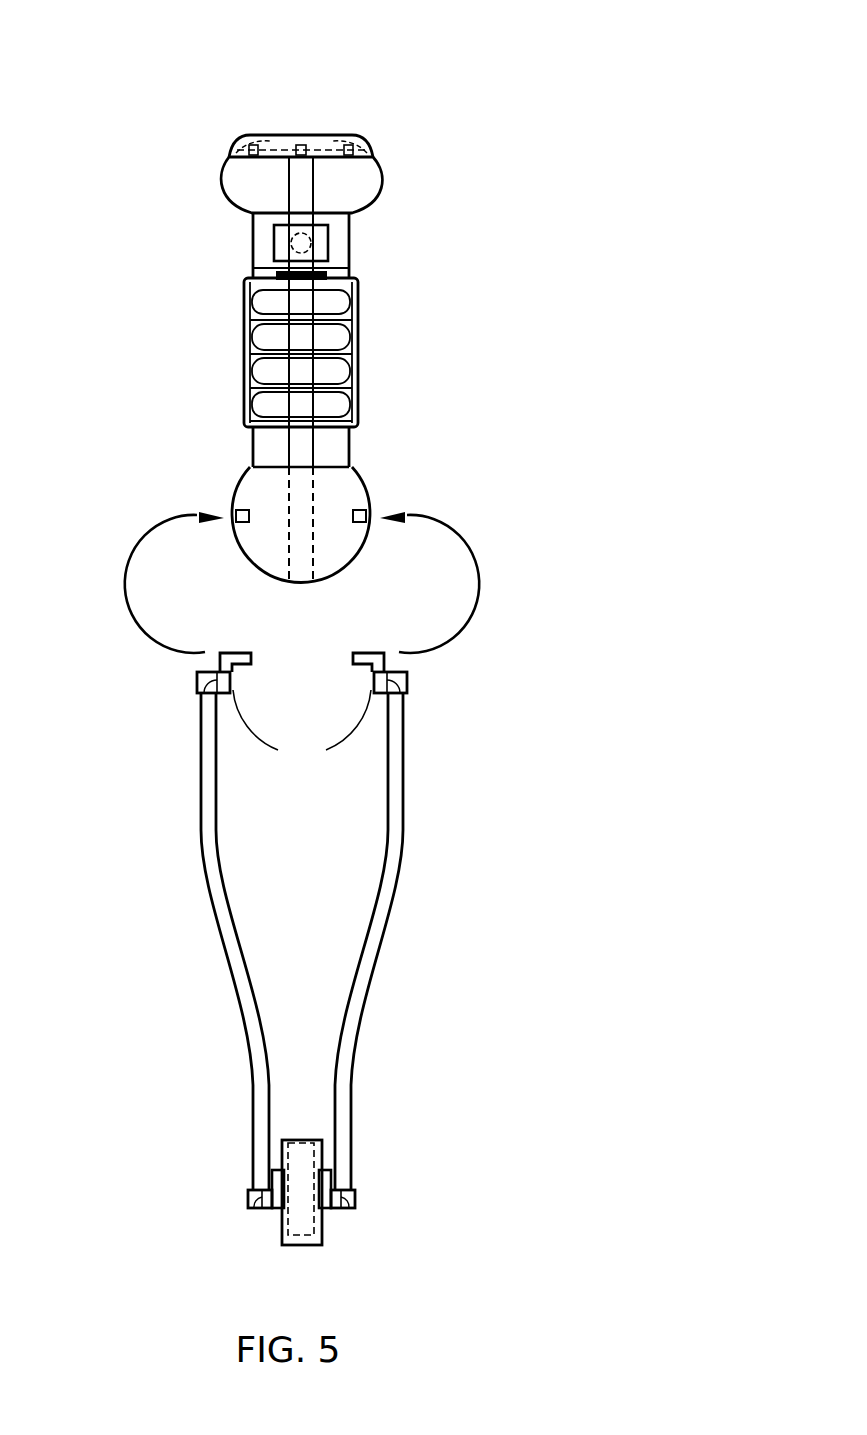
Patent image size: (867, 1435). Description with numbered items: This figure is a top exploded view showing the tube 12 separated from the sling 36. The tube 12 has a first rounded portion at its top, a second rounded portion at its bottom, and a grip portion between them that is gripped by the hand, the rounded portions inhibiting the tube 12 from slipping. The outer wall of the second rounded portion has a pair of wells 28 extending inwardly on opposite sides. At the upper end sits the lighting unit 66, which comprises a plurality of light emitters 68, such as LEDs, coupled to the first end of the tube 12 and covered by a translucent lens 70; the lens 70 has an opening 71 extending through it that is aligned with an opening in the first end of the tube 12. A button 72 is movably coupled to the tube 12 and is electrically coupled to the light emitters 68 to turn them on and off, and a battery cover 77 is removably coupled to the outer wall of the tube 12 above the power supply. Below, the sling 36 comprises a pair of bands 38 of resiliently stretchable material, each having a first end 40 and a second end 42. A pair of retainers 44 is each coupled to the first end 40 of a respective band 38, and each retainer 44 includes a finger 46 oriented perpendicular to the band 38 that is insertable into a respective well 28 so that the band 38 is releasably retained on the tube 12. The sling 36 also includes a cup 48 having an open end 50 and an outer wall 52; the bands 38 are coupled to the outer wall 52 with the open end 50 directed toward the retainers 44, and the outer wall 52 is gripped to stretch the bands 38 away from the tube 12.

The tube 12 is at (150, 366).
The wells 28 is at (240, 510).
The sling 36 is at (432, 1004).
The bands 38 is at (201, 825).
The first end 40 is at (200, 670).
The second end 42 is at (250, 1207).
The retainers 44 is at (302, 738).
The finger 46 is at (252, 654).
The cup 48 is at (282, 1237).
The open end 50 is at (297, 1138).
The outer wall 52 is at (322, 1158).
The lighting unit 66 is at (353, 102).
The light emitters 68 is at (258, 137).
The lens 70 is at (232, 140).
The opening 71 is at (303, 128).
The button 72 is at (273, 225).
The battery cover 77 is at (328, 234).